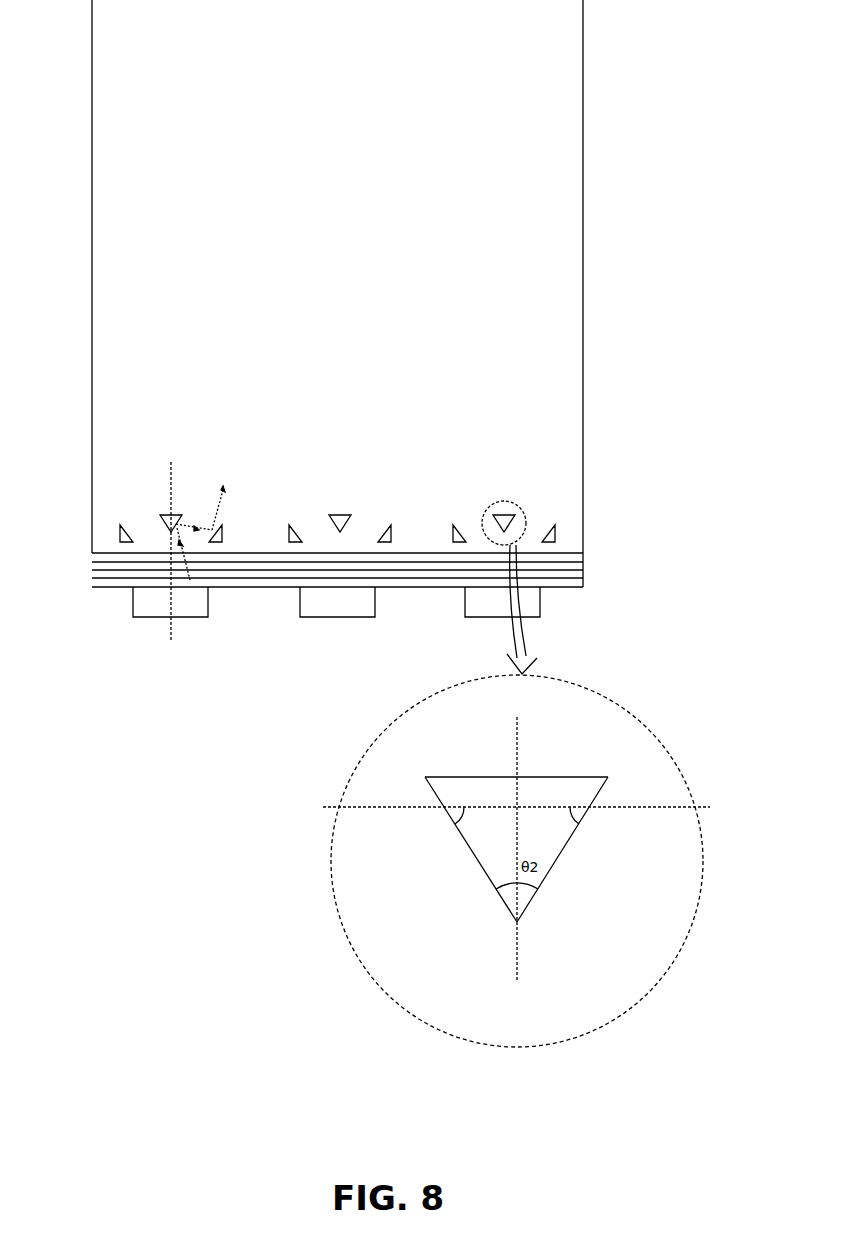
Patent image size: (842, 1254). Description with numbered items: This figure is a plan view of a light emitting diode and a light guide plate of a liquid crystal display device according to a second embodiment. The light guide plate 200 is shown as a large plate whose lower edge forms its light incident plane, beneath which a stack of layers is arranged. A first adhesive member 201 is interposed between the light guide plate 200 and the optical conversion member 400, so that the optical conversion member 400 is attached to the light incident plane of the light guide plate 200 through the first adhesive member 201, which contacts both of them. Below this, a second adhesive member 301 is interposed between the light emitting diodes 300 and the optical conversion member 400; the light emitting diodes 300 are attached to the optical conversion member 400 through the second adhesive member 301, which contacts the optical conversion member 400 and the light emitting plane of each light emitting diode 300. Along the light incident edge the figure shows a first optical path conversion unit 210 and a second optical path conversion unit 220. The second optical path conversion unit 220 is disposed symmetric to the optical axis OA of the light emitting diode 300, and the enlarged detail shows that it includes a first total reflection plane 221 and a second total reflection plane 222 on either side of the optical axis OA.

The light guide plate 200 is at (100, 378).
The first adhesive member 201 is at (92, 553).
The optical conversion member 400 is at (92, 571).
The second adhesive member 301 is at (92, 587).
The light emitting diode 300 is at (142, 604).
The first optical path conversion unit 210 is at (289, 537).
The second optical path conversion unit 220 is at (340, 532).
The first total reflection plane 221 is at (403, 849).
The second total reflection plane 222 is at (631, 849).
The optical axis OA is at (345, 734).